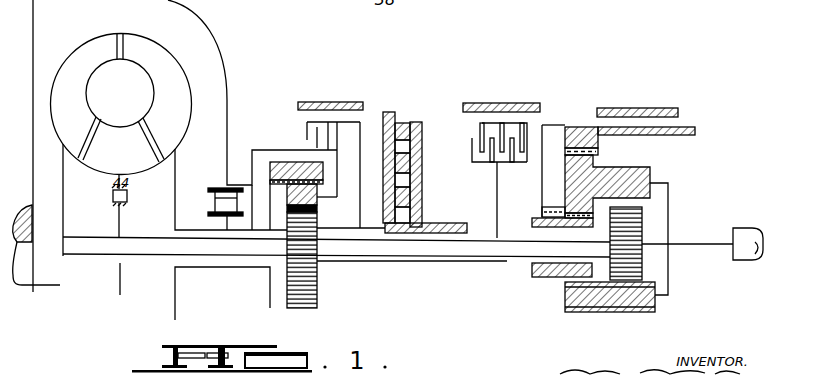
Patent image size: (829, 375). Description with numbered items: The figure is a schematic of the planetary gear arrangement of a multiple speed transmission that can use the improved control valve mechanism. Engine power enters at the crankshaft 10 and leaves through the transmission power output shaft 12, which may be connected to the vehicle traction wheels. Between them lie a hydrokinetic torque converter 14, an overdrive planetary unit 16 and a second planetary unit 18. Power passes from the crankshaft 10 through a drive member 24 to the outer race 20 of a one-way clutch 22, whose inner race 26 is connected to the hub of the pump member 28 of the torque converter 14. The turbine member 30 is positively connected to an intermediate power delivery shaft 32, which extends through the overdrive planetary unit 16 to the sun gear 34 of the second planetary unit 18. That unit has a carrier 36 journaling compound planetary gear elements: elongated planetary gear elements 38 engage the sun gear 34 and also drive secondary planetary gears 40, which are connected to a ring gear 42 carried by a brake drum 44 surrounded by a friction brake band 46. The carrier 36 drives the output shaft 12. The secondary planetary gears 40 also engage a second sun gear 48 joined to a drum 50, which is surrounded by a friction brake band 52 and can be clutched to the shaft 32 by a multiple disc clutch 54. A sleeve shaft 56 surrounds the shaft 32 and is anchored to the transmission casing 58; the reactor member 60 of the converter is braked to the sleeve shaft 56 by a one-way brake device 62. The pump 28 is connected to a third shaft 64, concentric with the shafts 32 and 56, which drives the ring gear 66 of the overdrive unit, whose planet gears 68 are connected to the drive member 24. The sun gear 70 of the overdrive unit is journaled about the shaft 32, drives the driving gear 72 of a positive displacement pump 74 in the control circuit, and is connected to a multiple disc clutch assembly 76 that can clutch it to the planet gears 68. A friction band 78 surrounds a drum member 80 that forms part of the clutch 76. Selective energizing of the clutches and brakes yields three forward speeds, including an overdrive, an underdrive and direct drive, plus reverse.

The crankshaft 10 is at (45, 207).
The transmission power output shaft 12 is at (748, 228).
The hydrokinetic torque converter 14 is at (164, 44).
The overdrive planetary unit 16 is at (284, 161).
The second planetary unit 18 is at (585, 126).
The outer race 20 is at (220, 187).
The one-way clutch 22 is at (218, 198).
The drive member 24 is at (212, 33).
The inner race 26 is at (210, 215).
The pump member 28 is at (159, 122).
The turbine member 30 is at (88, 69).
The intermediate power delivery shaft 32 is at (77, 258).
The sun gear 34 is at (638, 235).
The carrier 36 is at (673, 197).
The planetary gear elements 38 is at (650, 302).
The secondary planetary gears 40 is at (583, 168).
The ring gear 42 is at (565, 143).
The brake drum 44 is at (690, 126).
The friction brake band 46 is at (653, 107).
The second sun gear 48 is at (543, 277).
The drum 50 is at (483, 123).
The friction brake band 52 is at (498, 103).
The multiple disc clutch 54 is at (472, 153).
The sleeve shaft 56 is at (141, 232).
The transmission casing 58 is at (420, 223).
The reactor member 60 is at (104, 138).
The one-way brake device 62 is at (110, 205).
The third shaft 64 is at (250, 224).
The ring gear 66 is at (321, 161).
The planet gears 68 is at (318, 203).
The sun gear 70 is at (318, 293).
The driving gear 72 is at (403, 193).
The positive displacement pump 74 is at (405, 108).
The multiple disc clutch assembly 76 is at (306, 123).
The friction band 78 is at (342, 100).
The drum member 80 is at (359, 122).